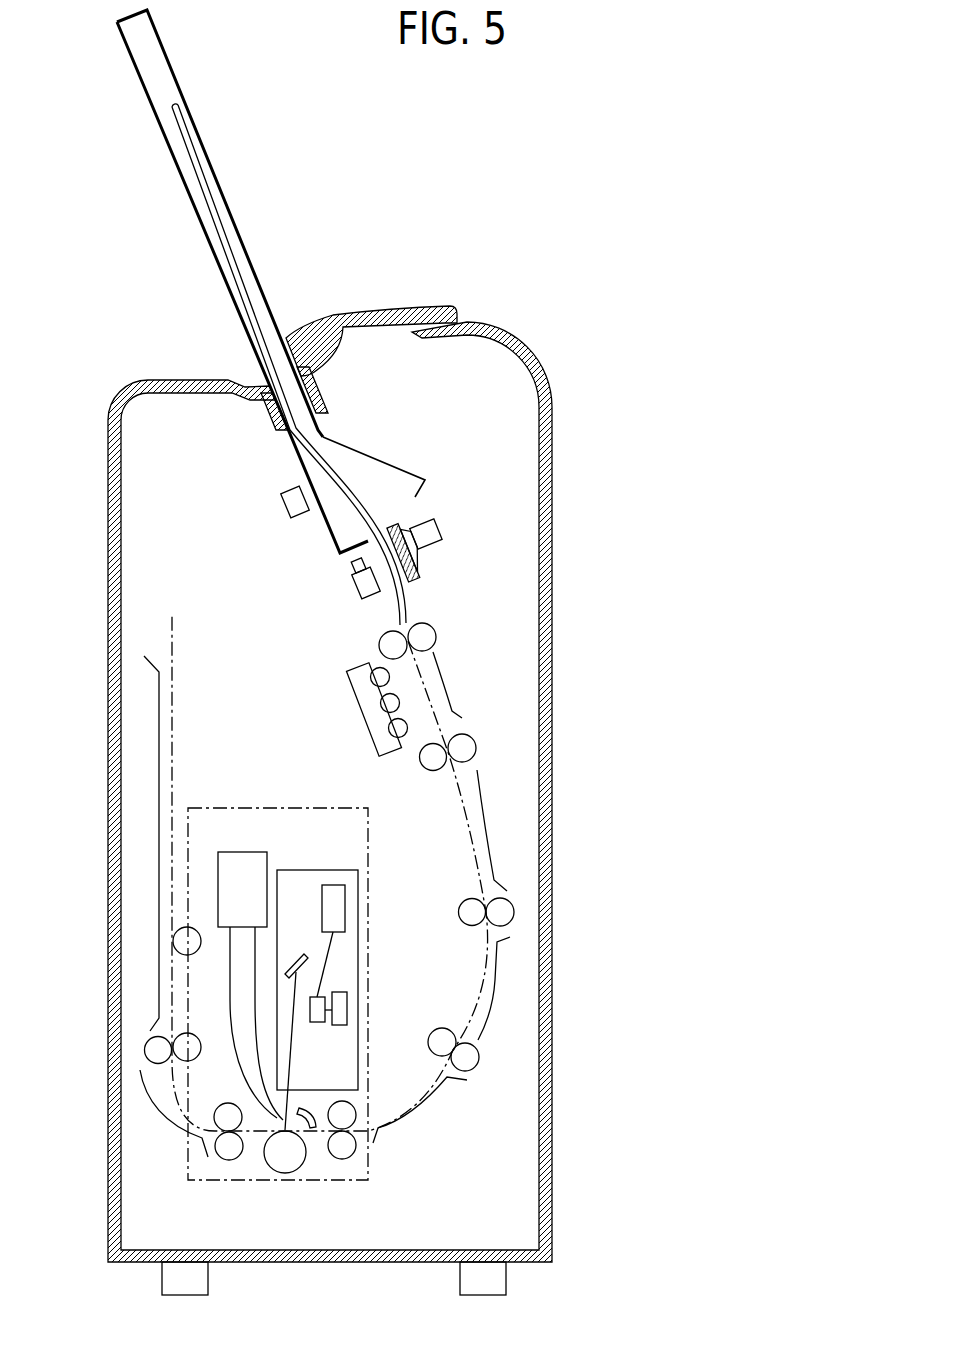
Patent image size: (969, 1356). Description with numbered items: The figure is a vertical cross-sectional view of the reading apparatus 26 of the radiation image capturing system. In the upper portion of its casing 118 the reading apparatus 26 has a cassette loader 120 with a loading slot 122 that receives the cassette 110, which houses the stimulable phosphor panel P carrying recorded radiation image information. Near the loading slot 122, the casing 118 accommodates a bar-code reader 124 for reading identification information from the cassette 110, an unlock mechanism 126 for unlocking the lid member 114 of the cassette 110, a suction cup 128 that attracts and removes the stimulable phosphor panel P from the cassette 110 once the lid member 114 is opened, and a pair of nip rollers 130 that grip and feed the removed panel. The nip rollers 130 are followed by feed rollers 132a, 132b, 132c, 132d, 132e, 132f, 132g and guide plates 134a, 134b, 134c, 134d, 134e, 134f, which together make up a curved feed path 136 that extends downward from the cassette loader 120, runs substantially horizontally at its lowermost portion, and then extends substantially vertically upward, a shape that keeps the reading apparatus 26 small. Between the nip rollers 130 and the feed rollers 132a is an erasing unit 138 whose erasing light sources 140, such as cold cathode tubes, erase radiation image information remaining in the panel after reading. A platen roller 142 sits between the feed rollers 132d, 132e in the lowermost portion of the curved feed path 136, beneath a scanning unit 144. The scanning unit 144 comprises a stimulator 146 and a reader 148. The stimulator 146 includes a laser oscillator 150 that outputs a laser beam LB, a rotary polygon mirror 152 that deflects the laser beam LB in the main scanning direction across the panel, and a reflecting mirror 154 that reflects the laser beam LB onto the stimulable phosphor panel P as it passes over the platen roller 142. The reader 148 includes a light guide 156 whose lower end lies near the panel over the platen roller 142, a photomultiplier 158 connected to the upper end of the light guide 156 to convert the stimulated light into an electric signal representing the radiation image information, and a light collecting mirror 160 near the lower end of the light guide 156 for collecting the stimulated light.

The reading apparatus 26 is at (499, 143).
The cassette 110 is at (170, 52).
The stimulable phosphor panel P is at (199, 170).
The lid member 114 is at (388, 463).
The casing 118 is at (552, 470).
The cassette loader 120 is at (296, 421).
The loading slot 122 is at (317, 385).
The bar-code reader 124 is at (292, 506).
The unlock mechanism 126 is at (355, 590).
The suction cup 128 is at (415, 567).
The nip rollers 130 is at (436, 637).
The curved feed path 136 is at (505, 850).
The erasing unit 138 is at (343, 690).
The erasing light sources 140 is at (382, 709).
The feed rollers 132a is at (487, 728).
The feed rollers 132b is at (467, 905).
The feed rollers 132c is at (472, 1070).
The feed rollers 132d is at (343, 1160).
The feed rollers 132e is at (230, 1160).
The feed rollers 132f is at (145, 1050).
The feed roller 132g is at (174, 941).
The guide plate 134a is at (445, 684).
The guide plate 134b is at (502, 815).
The guide plate 134c is at (491, 1012).
The guide plate 134d is at (418, 1104).
The guide plate 134e is at (160, 1118).
The guide plate 134f is at (159, 764).
The platen roller 142 is at (285, 1174).
The scanning unit 144 is at (310, 990).
The stimulator 146 is at (354, 981).
The reader 148 is at (252, 965).
The laser oscillator 150 is at (331, 892).
The rotary polygon mirror 152 is at (348, 1010).
The reflecting mirror 154 is at (296, 958).
The light guide 156 is at (230, 1010).
The photomultiplier 158 is at (233, 863).
The light collecting mirror 160 is at (308, 1105).
The laser beam LB is at (317, 1031).